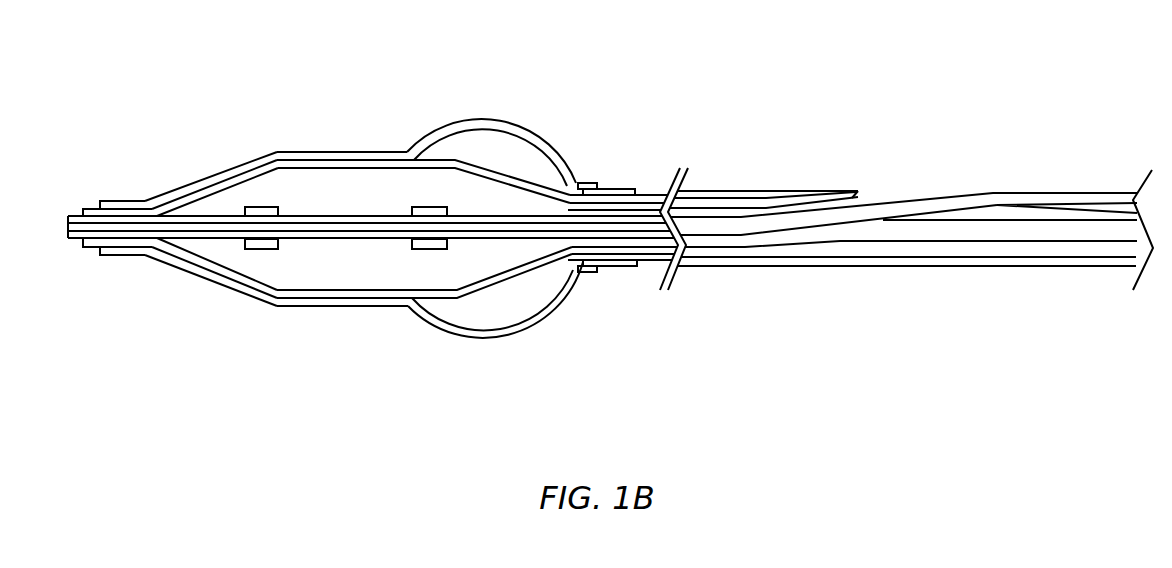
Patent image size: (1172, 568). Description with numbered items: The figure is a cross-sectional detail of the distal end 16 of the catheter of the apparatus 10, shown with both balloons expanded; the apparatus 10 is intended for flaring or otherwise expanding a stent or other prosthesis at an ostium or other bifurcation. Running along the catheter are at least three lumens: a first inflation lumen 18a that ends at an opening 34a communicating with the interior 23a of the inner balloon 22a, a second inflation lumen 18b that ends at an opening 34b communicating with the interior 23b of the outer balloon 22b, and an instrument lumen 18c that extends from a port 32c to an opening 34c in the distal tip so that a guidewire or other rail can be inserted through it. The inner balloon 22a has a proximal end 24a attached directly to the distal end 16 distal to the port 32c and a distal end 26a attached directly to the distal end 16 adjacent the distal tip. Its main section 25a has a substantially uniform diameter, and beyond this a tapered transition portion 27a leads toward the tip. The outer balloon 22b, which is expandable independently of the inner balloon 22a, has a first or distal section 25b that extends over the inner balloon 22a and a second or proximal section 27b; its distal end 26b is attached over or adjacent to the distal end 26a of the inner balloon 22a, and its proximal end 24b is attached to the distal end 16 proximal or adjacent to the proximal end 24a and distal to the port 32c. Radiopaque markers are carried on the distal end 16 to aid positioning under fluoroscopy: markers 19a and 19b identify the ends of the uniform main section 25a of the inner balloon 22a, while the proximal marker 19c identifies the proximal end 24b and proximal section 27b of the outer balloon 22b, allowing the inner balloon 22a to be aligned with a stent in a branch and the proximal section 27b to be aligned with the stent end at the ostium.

The apparatus 10 is at (849, 94).
The distal end 16 is at (860, 267).
The inflation lumen 18a is at (933, 230).
The inflation lumen 18b is at (982, 253).
The instrument lumen 18c is at (863, 206).
The marker 19a is at (245, 274).
The marker 19b is at (423, 251).
The proximal marker 19c is at (625, 273).
The inner balloon 22a is at (310, 310).
The outer balloon 22b is at (477, 352).
The interior 23a is at (360, 202).
The interior 23b is at (520, 167).
The proximal end 24a is at (603, 202).
The proximal end 24b is at (590, 183).
The main section 25a is at (377, 152).
The first section 25b is at (289, 152).
The distal end 26a is at (118, 201).
The distal end 26b is at (134, 205).
The transition portion 27a is at (247, 163).
The second section 27b is at (500, 120).
The port 32c is at (861, 196).
The opening 34a is at (592, 247).
The opening 34b is at (619, 202).
The opening 34c is at (67, 225).